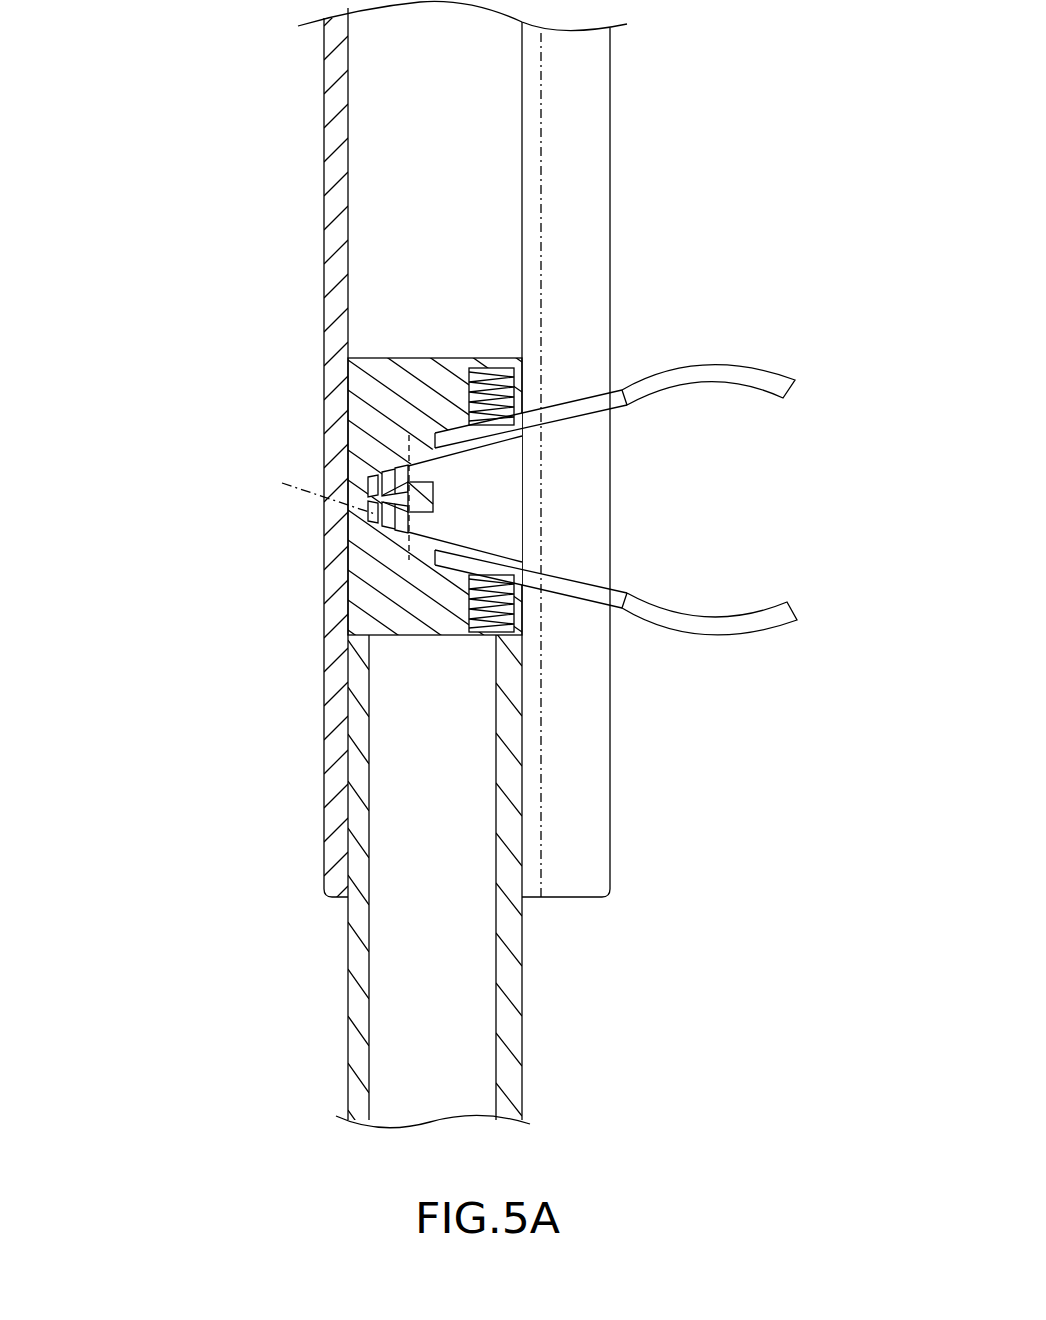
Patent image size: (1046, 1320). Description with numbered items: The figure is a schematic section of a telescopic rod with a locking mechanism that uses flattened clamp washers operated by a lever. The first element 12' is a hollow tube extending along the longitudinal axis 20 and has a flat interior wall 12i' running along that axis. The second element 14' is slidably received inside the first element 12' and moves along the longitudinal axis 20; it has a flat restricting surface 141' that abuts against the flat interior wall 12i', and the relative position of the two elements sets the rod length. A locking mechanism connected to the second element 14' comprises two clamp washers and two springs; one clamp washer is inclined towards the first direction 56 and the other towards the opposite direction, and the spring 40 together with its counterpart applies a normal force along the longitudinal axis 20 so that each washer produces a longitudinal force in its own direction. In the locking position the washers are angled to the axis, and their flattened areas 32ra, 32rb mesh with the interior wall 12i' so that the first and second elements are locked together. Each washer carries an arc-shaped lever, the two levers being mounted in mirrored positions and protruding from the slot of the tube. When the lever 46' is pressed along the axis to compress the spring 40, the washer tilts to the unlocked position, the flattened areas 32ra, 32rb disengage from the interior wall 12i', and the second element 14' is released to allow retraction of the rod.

The first element 12' is at (615, 571).
The flat interior wall 12i' is at (595, 465).
The second element 14' is at (499, 886).
The flat restricting surface 141' is at (499, 886).
The longitudinal axis 20 is at (438, 60).
The flattened area 32ra is at (522, 430).
The flattened area 32rb is at (522, 560).
The spring 40 is at (514, 613).
The lever 46' is at (626, 624).
The first direction 56 is at (102, 492).